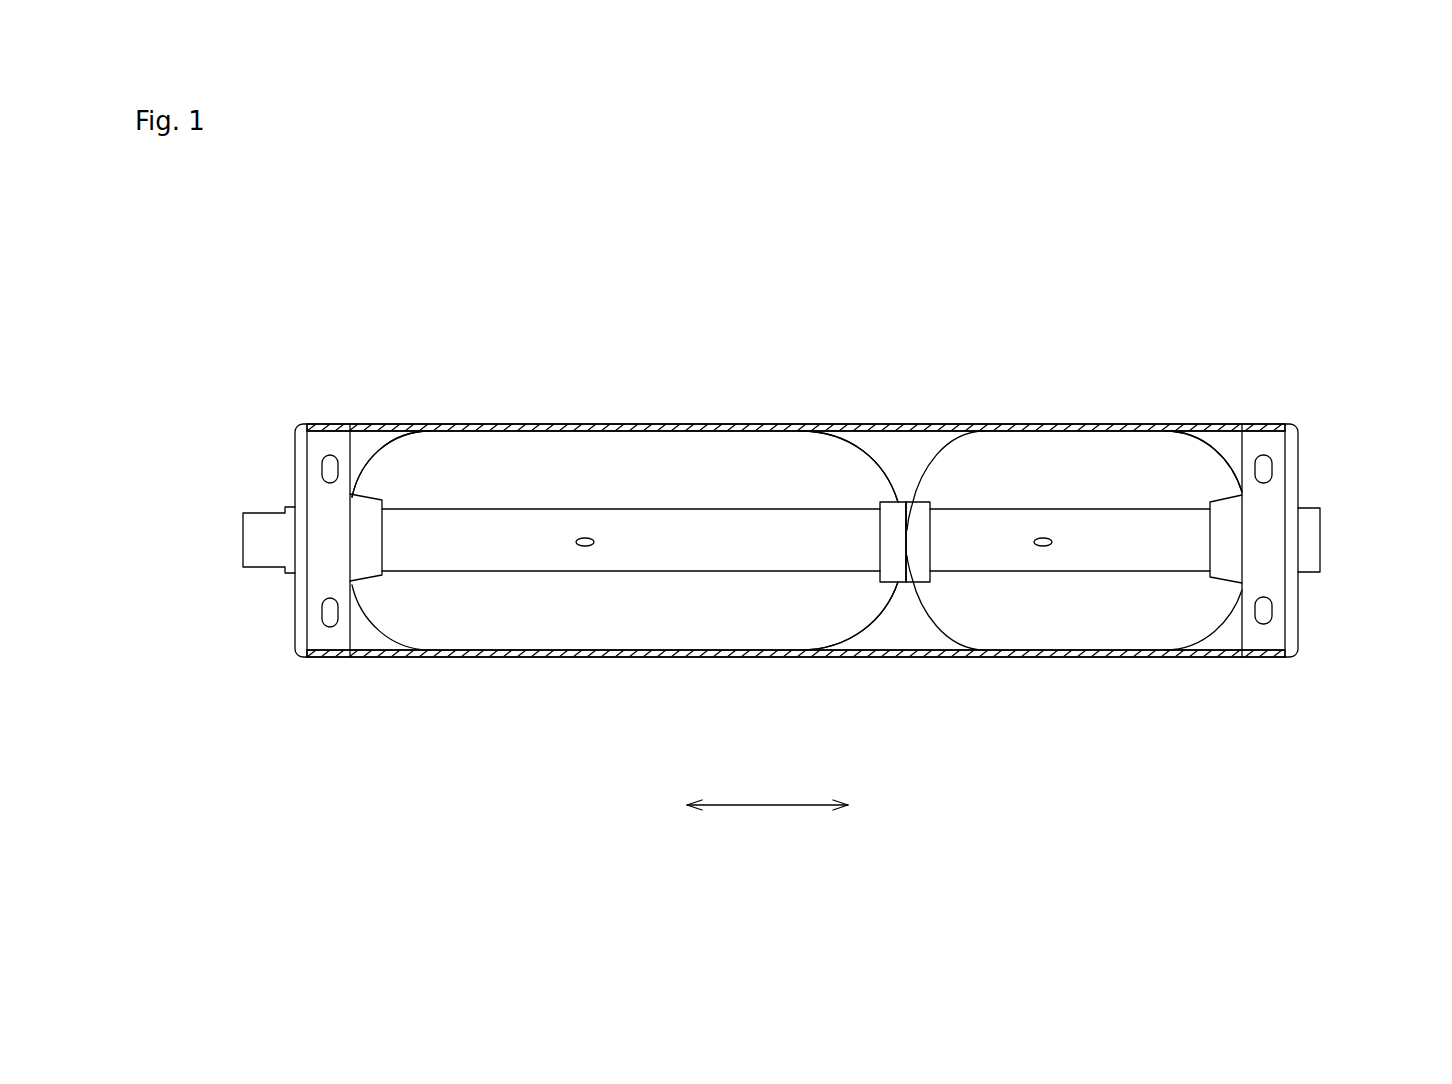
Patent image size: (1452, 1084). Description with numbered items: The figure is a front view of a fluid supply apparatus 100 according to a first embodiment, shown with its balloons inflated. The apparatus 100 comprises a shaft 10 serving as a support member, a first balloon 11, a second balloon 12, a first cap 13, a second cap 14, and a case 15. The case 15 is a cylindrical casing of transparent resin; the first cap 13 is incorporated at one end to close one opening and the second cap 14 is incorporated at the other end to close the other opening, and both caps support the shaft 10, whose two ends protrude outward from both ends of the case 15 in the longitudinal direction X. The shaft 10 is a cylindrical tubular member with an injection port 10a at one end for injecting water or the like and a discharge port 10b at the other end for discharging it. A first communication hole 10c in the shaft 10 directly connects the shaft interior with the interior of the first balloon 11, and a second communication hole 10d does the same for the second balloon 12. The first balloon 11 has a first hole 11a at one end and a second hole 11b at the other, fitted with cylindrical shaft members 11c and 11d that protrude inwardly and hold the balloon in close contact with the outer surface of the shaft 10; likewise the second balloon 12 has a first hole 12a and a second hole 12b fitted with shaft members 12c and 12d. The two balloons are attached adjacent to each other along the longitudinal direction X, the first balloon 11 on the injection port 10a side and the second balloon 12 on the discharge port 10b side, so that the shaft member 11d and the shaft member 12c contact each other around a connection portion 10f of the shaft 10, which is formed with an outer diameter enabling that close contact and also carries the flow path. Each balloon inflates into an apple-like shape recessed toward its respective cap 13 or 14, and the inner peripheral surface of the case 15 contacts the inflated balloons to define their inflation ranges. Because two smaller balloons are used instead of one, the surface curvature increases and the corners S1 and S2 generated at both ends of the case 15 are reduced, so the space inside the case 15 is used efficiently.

The fluid supply apparatus 100 is at (1247, 300).
The shaft 10 is at (632, 535).
The injection port 10a is at (243, 545).
The discharge port 10b is at (1320, 528).
The first communication hole 10c is at (585, 548).
The second communication hole 10d is at (1043, 548).
The connection portion 10f is at (893, 548).
The first balloon 11 is at (483, 445).
The first hole 11a is at (350, 515).
The second hole 11b is at (907, 500).
The shaft member 11c is at (367, 567).
The shaft member 11d is at (892, 520).
The second balloon 12 is at (990, 452).
The first hole 12a is at (905, 562).
The second hole 12b is at (1247, 505).
The shaft member 12c is at (920, 538).
The shaft member 12d is at (1227, 567).
The first cap 13 is at (292, 607).
The second cap 14 is at (1292, 582).
The case 15 is at (1123, 428).
The corner S1 is at (362, 440).
The corner S2 is at (1228, 440).
The longitudinal direction X is at (775, 805).